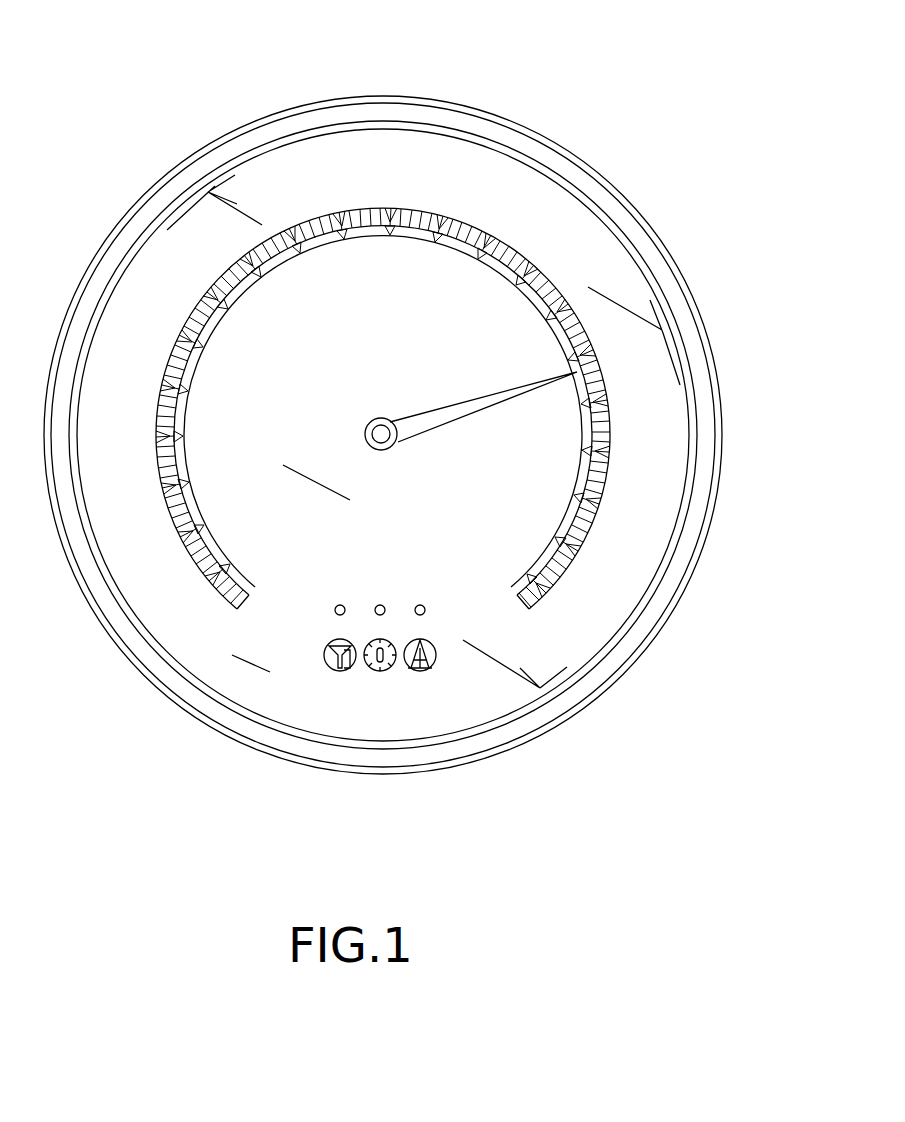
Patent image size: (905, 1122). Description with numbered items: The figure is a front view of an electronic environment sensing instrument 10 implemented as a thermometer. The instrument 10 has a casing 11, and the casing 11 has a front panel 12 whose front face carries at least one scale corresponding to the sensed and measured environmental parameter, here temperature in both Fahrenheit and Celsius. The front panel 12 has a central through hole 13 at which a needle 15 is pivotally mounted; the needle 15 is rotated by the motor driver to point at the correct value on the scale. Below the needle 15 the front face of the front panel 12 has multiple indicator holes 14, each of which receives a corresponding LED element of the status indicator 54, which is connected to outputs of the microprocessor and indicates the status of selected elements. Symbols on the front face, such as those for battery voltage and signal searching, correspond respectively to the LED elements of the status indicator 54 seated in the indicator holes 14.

The electronic environment sensing instrument 10 is at (493, 90).
The casing 11 is at (580, 183).
The front panel 12 is at (628, 278).
The central through hole 13 is at (378, 448).
The indicator hole 14 is at (420, 600).
The needle 15 is at (450, 415).
The status indicator 54 is at (425, 600).